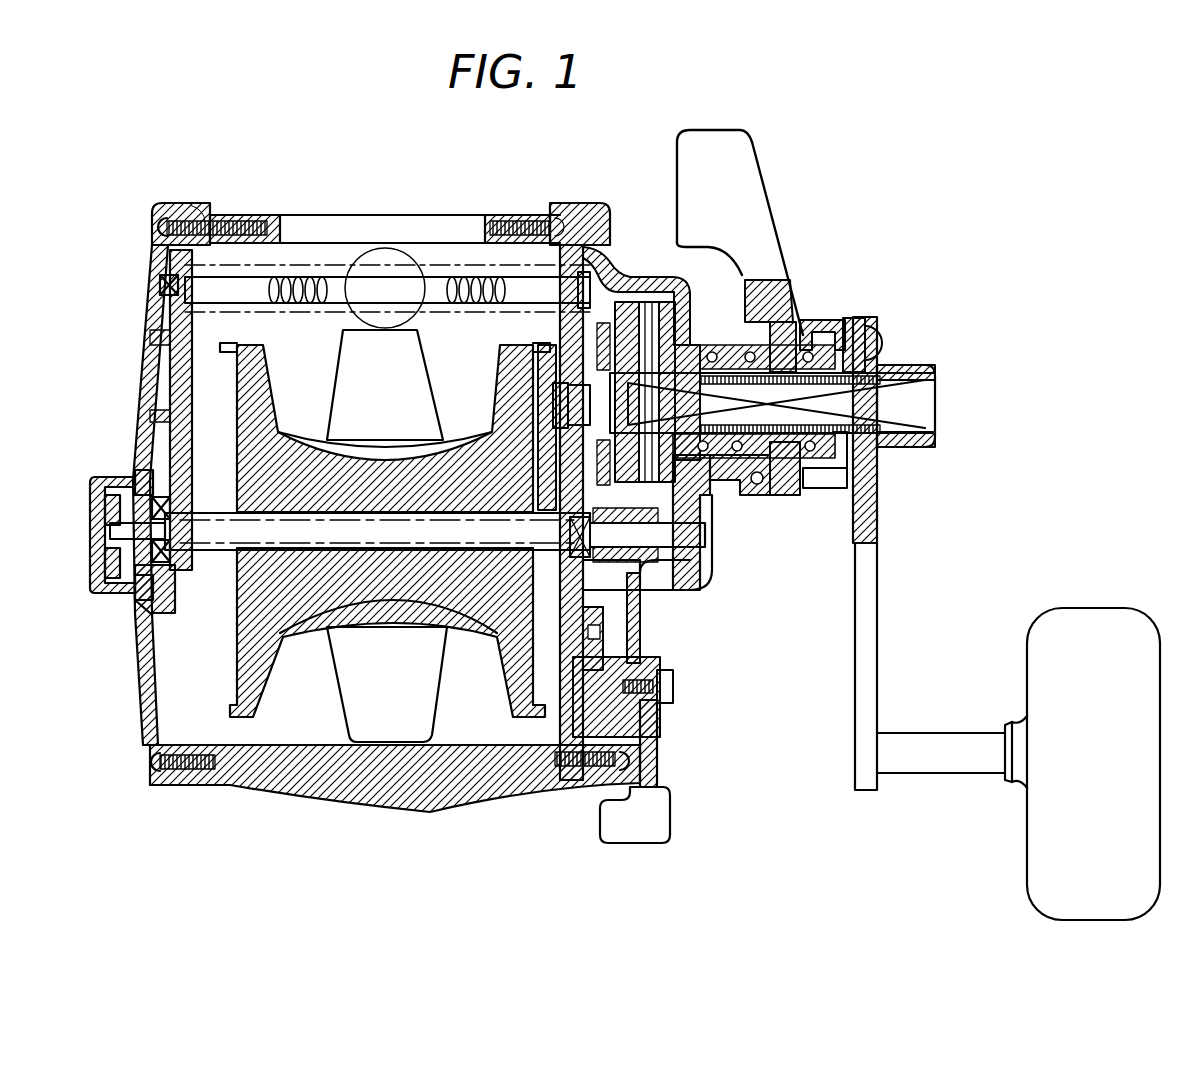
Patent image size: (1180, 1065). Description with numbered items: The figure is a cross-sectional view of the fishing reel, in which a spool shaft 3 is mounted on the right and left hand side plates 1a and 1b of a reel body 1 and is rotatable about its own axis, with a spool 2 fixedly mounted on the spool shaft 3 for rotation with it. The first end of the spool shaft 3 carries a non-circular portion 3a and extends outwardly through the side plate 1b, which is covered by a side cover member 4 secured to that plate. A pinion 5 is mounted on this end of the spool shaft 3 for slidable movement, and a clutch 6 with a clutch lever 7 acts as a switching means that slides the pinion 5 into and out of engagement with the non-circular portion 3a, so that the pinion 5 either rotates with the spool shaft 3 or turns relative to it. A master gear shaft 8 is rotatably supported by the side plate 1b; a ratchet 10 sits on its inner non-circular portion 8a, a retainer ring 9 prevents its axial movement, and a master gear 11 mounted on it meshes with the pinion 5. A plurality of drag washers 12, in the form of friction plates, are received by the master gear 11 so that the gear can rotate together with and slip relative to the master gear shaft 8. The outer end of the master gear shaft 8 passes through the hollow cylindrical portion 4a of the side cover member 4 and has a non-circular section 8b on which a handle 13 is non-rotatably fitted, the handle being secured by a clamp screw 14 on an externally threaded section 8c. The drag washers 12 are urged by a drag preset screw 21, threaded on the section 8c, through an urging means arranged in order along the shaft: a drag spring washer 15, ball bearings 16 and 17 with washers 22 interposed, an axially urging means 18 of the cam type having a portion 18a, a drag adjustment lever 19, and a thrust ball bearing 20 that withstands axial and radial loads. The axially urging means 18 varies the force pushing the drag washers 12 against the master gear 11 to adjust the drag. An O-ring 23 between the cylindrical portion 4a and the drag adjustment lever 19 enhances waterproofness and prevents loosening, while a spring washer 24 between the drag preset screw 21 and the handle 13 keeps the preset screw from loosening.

The reel body 1 is at (262, 800).
The side plate 1a is at (197, 205).
The side plate 1b is at (558, 212).
The spool 2 is at (355, 480).
The spool shaft 3 is at (400, 530).
The non-circular portion 3a is at (570, 537).
The side cover member 4 is at (590, 212).
The hollow cylindrical portion 4a is at (710, 505).
The pinion 5 is at (650, 577).
The clutch 6 is at (618, 620).
The clutch lever 7 is at (668, 775).
The master gear shaft 8 is at (895, 348).
The non-circular portion 8a is at (540, 402).
The non-circular section 8b is at (937, 398).
The externally threaded section 8c is at (920, 450).
The retainer ring 9 is at (520, 378).
The ratchet 10 is at (545, 318).
The master gear 11 is at (626, 300).
The drag washers 12 is at (662, 290).
The handle 13 is at (873, 590).
The clamp screw 14 is at (937, 412).
The drag spring washer 15 is at (692, 322).
The ball bearing 16 is at (712, 475).
The ball bearing 17 is at (745, 478).
The axially urging means 18 is at (790, 326).
The drag lever boss 18a is at (790, 278).
The drag adjustment lever 19 is at (752, 152).
The ball bearing 20 is at (838, 335).
The drag preset screw 21 is at (866, 330).
The washers 22 is at (738, 342).
The O-ring 23 is at (766, 485).
The spring washer 24 is at (870, 478).